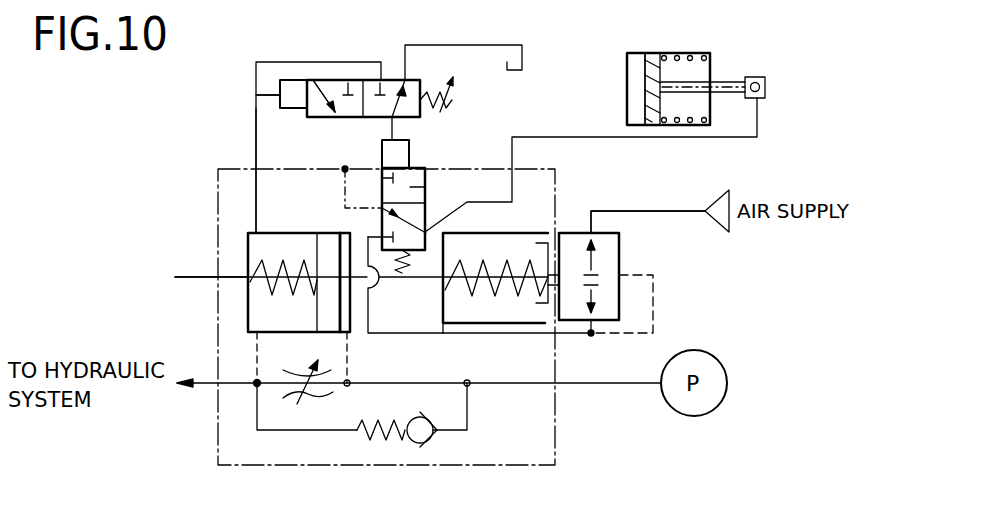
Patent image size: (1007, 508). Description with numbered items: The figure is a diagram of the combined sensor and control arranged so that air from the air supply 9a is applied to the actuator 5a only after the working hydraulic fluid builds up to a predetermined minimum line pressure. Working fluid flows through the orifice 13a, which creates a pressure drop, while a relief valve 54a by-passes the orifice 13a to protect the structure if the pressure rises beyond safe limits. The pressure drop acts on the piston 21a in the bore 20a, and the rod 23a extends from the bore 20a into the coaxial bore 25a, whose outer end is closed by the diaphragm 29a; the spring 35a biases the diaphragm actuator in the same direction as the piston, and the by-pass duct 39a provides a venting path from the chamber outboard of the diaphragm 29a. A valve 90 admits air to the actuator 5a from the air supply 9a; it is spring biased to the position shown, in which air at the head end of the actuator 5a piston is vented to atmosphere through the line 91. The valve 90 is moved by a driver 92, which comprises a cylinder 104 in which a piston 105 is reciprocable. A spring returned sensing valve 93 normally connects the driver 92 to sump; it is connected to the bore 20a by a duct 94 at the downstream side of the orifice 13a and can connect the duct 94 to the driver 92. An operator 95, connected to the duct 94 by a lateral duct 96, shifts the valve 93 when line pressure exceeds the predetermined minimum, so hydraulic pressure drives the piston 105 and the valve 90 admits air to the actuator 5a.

The sensing valve 93 is at (313, 80).
The duct 94 is at (330, 61).
The cylinder 104 is at (332, 97).
The lateral duct 96 is at (270, 96).
The operator 95 is at (280, 107).
The piston 105 is at (390, 131).
The driver 92 is at (410, 153).
The valve 90 is at (425, 195).
The line 91 is at (345, 188).
The actuator 5a is at (712, 63).
The air supply 9a is at (717, 197).
The bore 20a is at (272, 314).
The piston 21a is at (328, 322).
The rod 23a is at (212, 278).
The bore 25a is at (462, 320).
The spring 35a is at (485, 260).
The diaphragm 29a is at (559, 235).
The by-pass duct 39a is at (552, 292).
The orifice 13a is at (337, 393).
The relief valve 54a is at (427, 440).